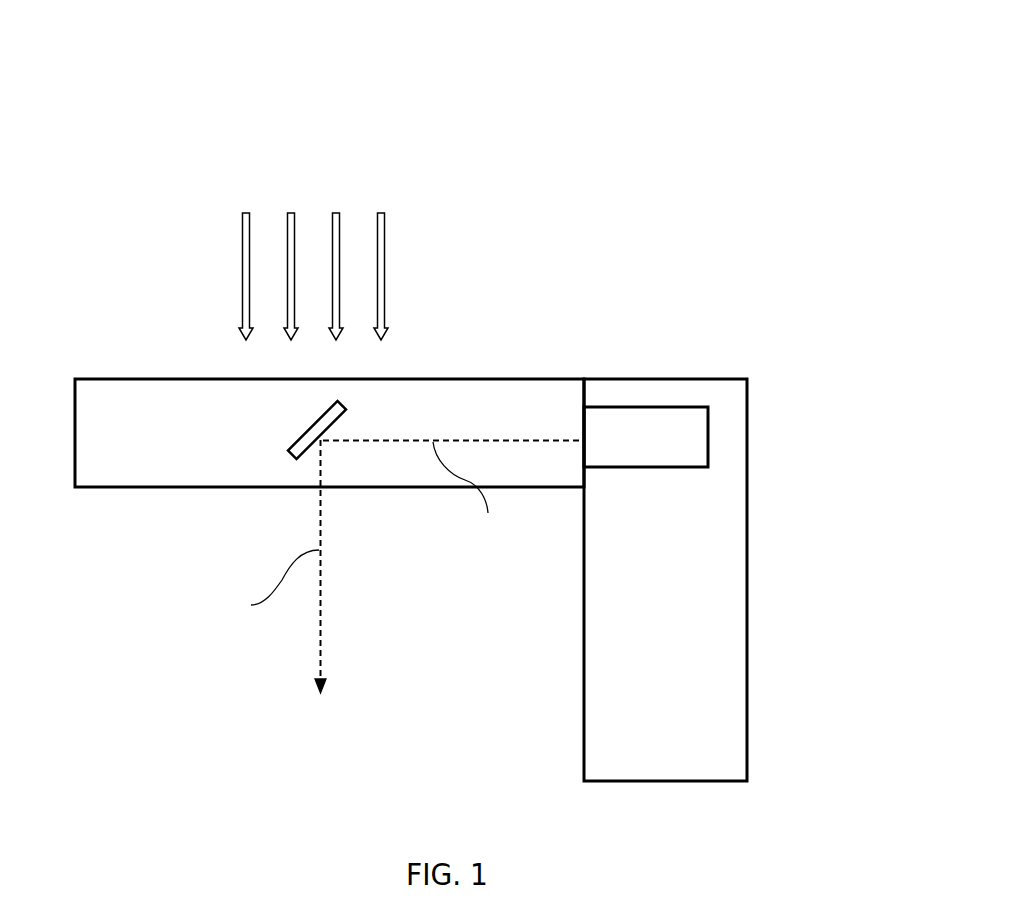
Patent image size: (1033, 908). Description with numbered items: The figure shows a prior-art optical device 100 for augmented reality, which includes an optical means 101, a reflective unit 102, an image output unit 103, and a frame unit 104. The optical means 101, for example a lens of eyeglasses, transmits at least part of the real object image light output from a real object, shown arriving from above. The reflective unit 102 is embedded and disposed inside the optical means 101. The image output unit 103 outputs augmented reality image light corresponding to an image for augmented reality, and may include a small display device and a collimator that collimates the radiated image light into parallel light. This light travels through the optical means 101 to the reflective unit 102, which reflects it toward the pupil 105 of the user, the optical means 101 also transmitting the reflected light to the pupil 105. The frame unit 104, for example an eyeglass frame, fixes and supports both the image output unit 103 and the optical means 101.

The optical device for augmented reality 100 is at (490, 130).
The optical means 101 is at (458, 379).
The reflective unit 102 is at (307, 431).
The image output unit 103 is at (708, 439).
The frame unit 104 is at (747, 580).
The pupil 105 is at (324, 708).